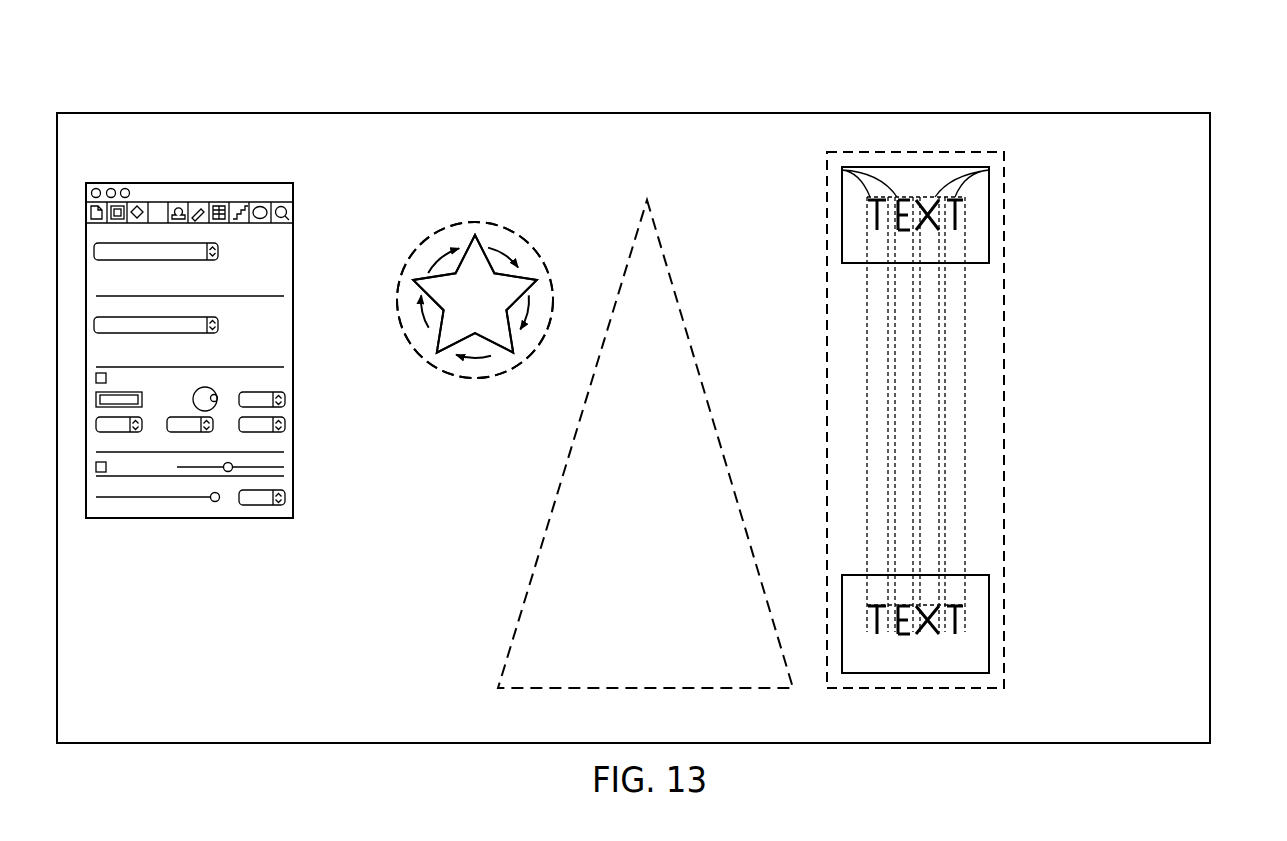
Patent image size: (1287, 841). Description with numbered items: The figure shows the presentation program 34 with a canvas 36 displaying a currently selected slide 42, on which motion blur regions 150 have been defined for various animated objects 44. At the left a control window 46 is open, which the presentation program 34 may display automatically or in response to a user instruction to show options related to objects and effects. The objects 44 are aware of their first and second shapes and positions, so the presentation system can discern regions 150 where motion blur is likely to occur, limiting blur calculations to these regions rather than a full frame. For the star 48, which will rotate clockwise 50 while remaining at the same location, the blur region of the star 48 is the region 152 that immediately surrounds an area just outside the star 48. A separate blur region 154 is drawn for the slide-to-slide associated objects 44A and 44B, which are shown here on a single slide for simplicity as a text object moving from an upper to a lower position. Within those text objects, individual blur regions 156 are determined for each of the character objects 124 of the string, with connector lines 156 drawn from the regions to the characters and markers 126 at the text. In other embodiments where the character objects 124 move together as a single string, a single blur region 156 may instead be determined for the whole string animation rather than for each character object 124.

The presentation program 34 is at (288, 40).
The canvas 36 is at (157, 681).
The slide 42 is at (1195, 584).
The objects 44 is at (476, 236).
The slide to slide associated object 44A is at (989, 200).
The slide to slide associated object 44B is at (989, 593).
The control window 46 is at (272, 193).
The star 48 is at (475, 294).
The clockwise rotation 50 is at (516, 262).
The character objects 124 is at (957, 231).
The character bounding boxes 126 is at (860, 213).
The motion blur regions 150 is at (450, 373).
The blur region of star 152 is at (475, 300).
The blur region for slide to slide associated objects 154 is at (915, 420).
The character blur regions 156 is at (915, 183).